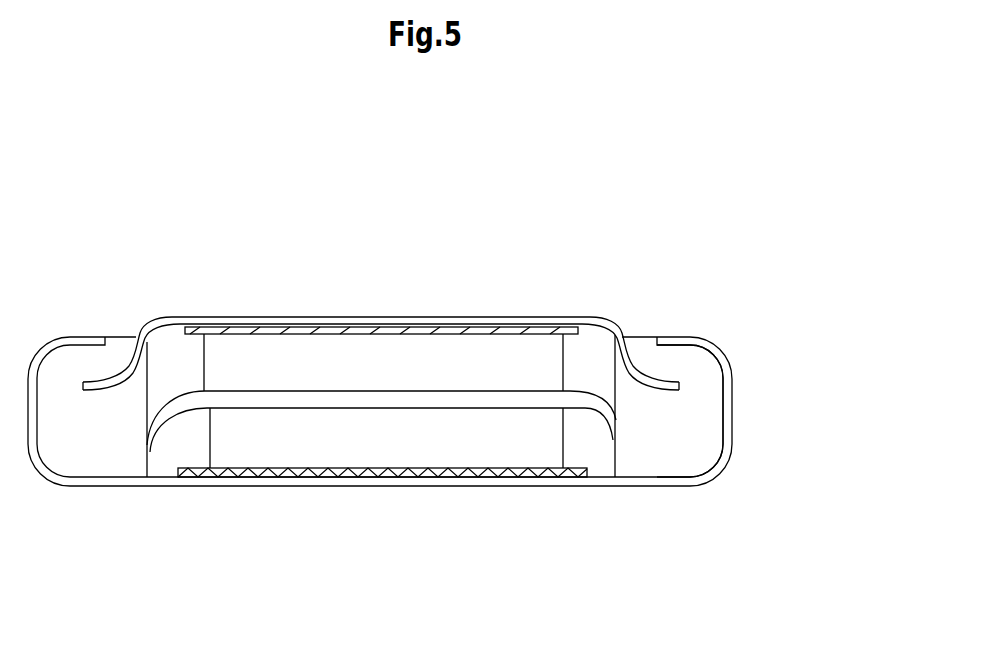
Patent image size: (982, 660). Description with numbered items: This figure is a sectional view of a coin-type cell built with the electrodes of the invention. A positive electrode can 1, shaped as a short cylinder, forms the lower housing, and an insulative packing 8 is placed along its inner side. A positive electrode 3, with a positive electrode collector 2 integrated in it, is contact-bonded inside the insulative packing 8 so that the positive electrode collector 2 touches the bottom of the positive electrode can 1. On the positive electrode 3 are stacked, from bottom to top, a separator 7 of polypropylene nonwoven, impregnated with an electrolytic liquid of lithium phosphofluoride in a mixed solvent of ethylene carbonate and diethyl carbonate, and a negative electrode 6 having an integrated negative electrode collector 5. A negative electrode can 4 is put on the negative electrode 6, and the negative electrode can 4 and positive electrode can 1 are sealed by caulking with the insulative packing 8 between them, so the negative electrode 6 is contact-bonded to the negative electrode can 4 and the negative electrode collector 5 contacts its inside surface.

The positive electrode can 1 is at (233, 483).
The positive electrode collector 2 is at (340, 477).
The positive electrode 3 is at (470, 447).
The negative electrode can 4 is at (230, 322).
The negative electrode collector 5 is at (330, 328).
The negative electrode 6 is at (453, 367).
The separator 7 is at (583, 400).
The insulative packing 8 is at (690, 427).